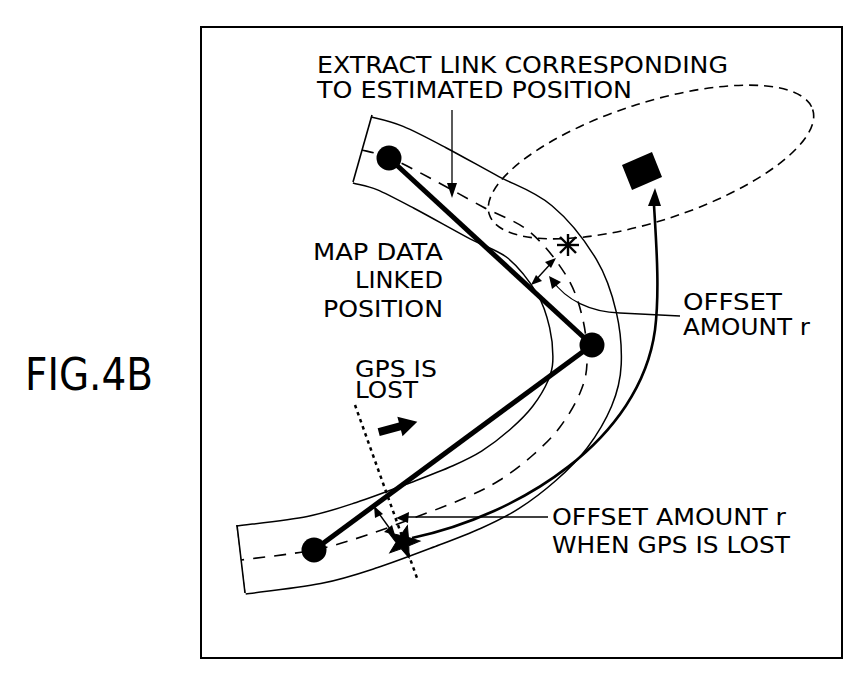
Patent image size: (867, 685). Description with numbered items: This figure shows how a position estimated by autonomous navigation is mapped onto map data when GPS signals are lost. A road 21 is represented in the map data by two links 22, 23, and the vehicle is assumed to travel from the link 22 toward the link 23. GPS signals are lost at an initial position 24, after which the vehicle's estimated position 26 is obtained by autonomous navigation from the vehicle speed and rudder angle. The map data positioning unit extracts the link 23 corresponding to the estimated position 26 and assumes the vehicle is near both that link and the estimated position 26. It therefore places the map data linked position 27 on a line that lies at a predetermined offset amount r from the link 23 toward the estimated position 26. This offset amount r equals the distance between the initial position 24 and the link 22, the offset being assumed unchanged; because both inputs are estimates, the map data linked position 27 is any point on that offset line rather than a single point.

The road 21 is at (282, 517).
The link 22 is at (530, 386).
The link 23 is at (423, 188).
The initial position 24 is at (400, 556).
The estimated position 26 is at (660, 167).
The map data linked position 27 is at (548, 251).